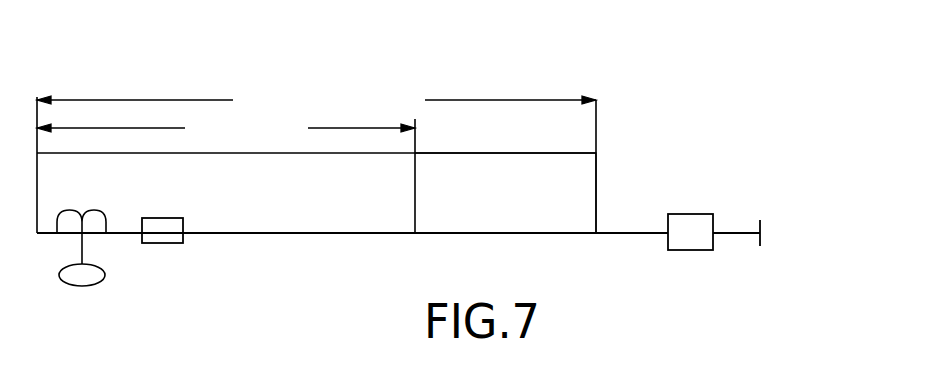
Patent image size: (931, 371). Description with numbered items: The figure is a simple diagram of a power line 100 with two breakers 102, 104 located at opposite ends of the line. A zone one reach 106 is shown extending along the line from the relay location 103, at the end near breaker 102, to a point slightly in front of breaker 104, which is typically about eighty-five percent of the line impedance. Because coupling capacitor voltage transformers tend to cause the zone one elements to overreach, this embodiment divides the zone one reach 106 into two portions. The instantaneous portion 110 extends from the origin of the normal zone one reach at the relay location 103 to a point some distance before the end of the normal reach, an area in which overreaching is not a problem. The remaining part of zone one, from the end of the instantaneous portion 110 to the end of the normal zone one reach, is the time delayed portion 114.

The power line 100 is at (325, 234).
The breaker 102 is at (165, 244).
The relay location 103 is at (80, 287).
The breaker 104 is at (690, 251).
The zone 1 reach 106 is at (443, 97).
The instantaneous portion 110 is at (143, 152).
The time delayed portion 114 is at (522, 150).